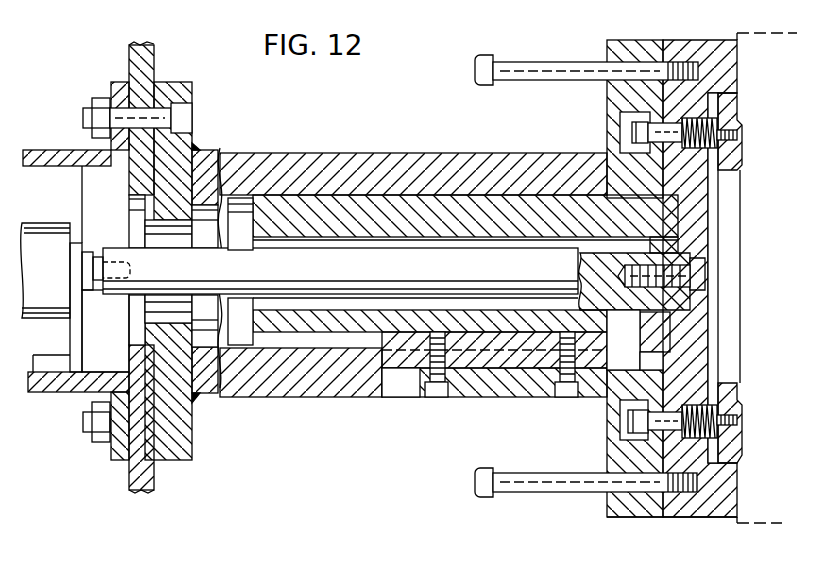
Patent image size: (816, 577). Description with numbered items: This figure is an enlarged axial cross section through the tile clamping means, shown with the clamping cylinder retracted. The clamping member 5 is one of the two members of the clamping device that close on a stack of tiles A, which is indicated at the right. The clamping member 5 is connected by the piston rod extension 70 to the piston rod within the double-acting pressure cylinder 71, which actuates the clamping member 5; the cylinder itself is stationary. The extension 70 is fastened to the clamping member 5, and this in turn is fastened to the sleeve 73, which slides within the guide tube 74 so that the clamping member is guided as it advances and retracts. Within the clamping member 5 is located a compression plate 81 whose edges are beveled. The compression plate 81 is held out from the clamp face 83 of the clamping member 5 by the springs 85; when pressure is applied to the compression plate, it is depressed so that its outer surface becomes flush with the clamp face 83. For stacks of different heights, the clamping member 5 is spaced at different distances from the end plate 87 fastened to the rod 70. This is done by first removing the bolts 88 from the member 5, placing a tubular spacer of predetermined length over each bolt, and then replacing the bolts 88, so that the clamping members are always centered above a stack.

The clamping member 5 is at (680, 518).
The piston rod extension 70 is at (163, 253).
The double-acting pressure cylinder 71 is at (50, 233).
The sleeve 73 is at (370, 203).
The guide tube 74 is at (268, 157).
The compression plate 81 is at (740, 163).
The clamp face 83 is at (737, 75).
The springs 85 is at (735, 397).
The end plate 87 is at (608, 100).
The bolts 88 is at (557, 67).
The stack of tiles A is at (768, 524).